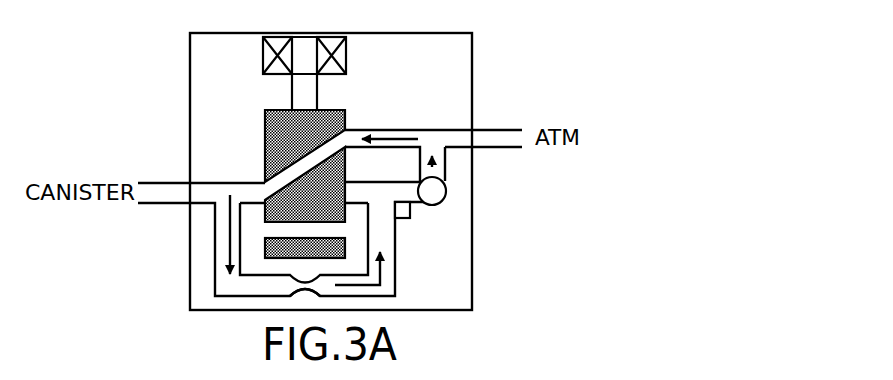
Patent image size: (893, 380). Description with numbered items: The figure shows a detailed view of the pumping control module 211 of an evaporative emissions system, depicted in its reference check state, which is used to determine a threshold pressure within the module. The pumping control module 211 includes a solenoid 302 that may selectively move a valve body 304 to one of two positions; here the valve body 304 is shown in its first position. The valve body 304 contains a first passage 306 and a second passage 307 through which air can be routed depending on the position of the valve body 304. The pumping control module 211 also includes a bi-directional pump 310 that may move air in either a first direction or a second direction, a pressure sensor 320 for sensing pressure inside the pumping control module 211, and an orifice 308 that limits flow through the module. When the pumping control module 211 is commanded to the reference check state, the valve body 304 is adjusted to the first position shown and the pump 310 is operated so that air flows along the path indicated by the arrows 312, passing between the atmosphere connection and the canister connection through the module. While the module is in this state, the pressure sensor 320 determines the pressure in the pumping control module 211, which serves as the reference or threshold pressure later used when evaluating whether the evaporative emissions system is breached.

The pumping control module 211 is at (472, 68).
The solenoid 302 is at (268, 60).
The valve body 304 is at (287, 123).
The first passage 306 is at (293, 172).
The second passage 307 is at (323, 232).
The orifice 308 is at (305, 292).
The pump 310 is at (433, 199).
The arrows 312 is at (392, 137).
The pressure sensor 320 is at (401, 216).